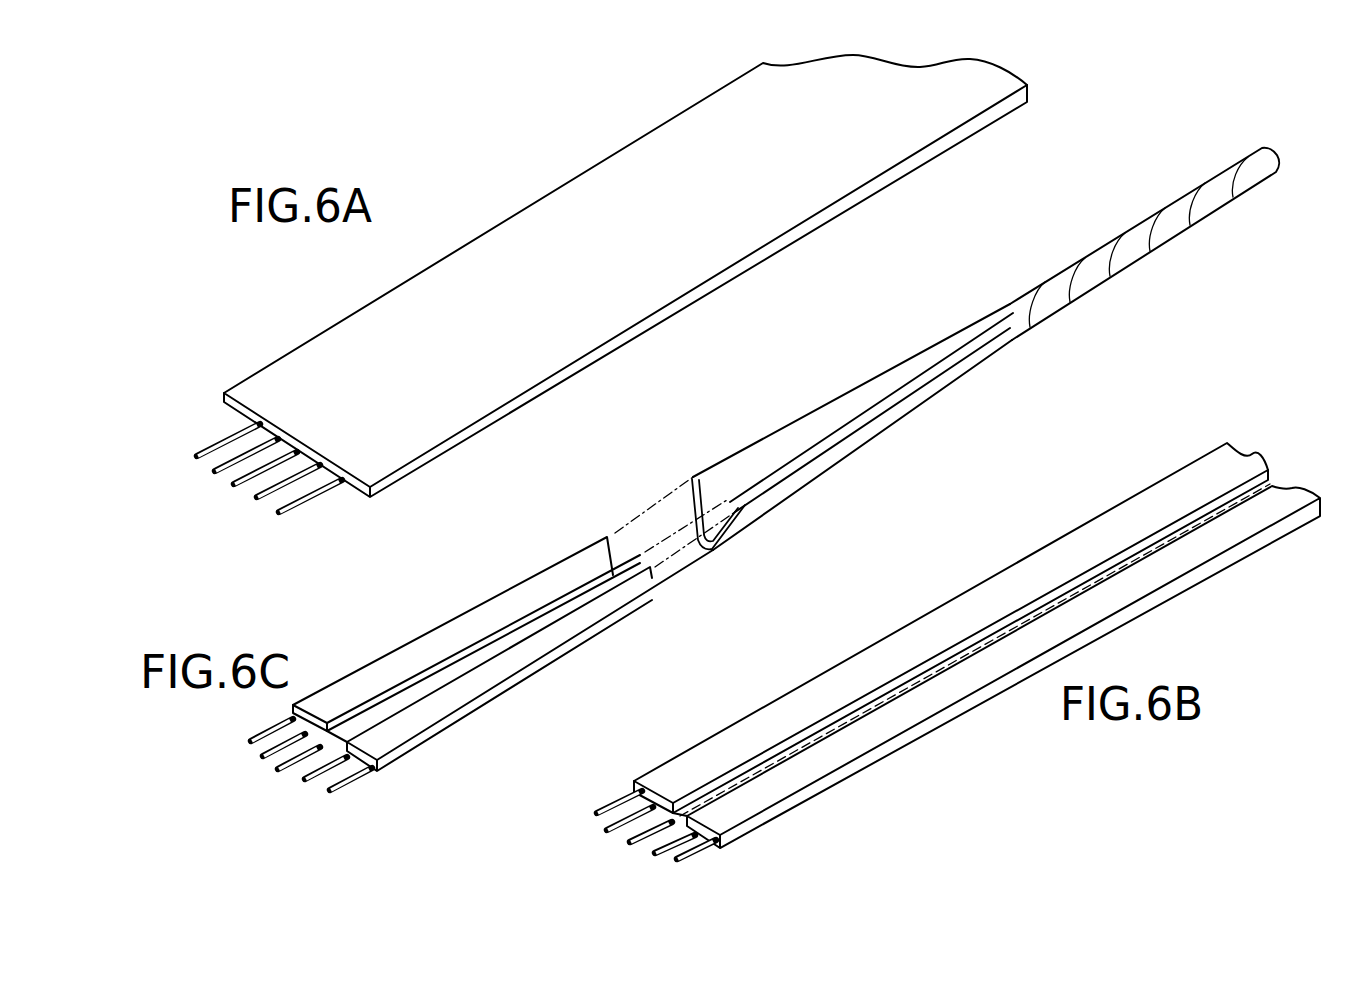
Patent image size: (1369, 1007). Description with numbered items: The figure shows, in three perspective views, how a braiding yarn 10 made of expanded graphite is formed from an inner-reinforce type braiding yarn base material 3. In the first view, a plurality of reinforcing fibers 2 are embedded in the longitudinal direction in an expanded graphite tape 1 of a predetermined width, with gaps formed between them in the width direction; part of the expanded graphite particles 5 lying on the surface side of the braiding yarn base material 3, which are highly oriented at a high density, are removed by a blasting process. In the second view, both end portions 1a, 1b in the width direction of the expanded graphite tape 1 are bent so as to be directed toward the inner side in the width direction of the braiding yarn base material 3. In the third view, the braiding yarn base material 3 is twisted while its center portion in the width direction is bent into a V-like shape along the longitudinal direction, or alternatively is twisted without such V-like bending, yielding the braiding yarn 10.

In FIG. 6A, the expanded graphite tape 1 is at (625, 276).
In FIG. 6C, the expanded graphite tape 1 is at (786, 467).
In FIG. 6B, the expanded graphite tape 1 is at (977, 668).
In FIG. 6C, the end portion in the width direction of the expanded graphite tape 1a is at (388, 743).
In FIG. 6B, the end portion in the width direction of the expanded graphite tape 1a is at (722, 815).
In FIG. 6C, the end portion in the width direction of the expanded graphite tape 1b is at (466, 634).
In FIG. 6B, the end portion in the width direction of the expanded graphite tape 1b is at (951, 628).
In FIG. 6A, the reinforcing fibers 2 is at (219, 474).
In FIG. 6C, the reinforcing fibers 2 is at (251, 743).
In FIG. 6B, the reinforcing fibers 2 is at (597, 814).
In FIG. 6A, the braiding yarn base material 3 is at (533, 202).
In FIG. 6C, the braiding yarn base material 3 is at (430, 634).
In FIG. 6B, the braiding yarn base material 3 is at (852, 656).
In FIG. 6A, the expanded graphite particles 5 is at (625, 271).
In FIG. 6C, the expanded graphite particles 5 is at (466, 630).
In FIG. 6B, the expanded graphite particles 5 is at (951, 623).
In FIG. 6C, the braiding yarn 10 is at (1175, 199).